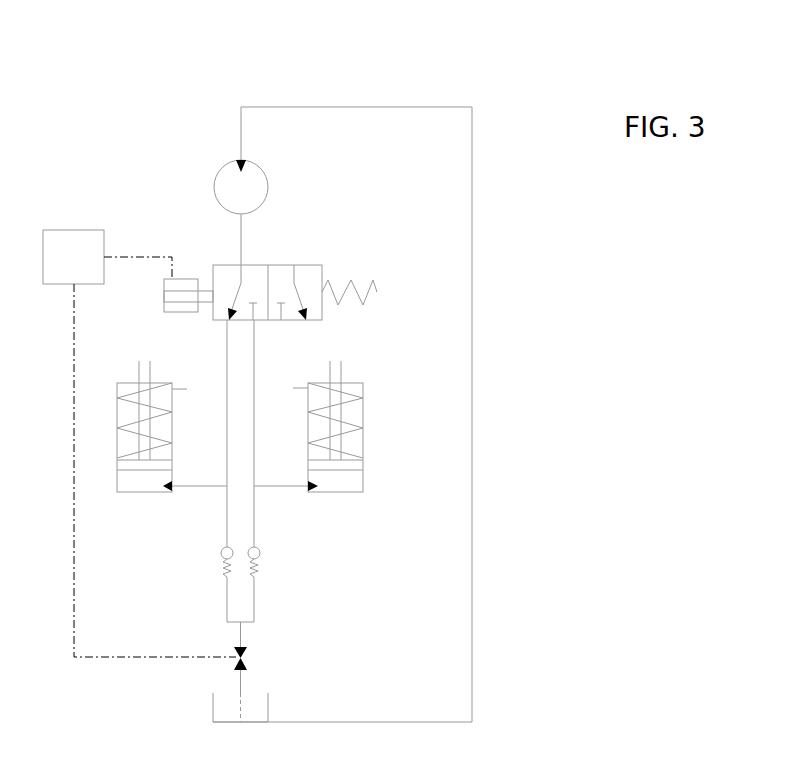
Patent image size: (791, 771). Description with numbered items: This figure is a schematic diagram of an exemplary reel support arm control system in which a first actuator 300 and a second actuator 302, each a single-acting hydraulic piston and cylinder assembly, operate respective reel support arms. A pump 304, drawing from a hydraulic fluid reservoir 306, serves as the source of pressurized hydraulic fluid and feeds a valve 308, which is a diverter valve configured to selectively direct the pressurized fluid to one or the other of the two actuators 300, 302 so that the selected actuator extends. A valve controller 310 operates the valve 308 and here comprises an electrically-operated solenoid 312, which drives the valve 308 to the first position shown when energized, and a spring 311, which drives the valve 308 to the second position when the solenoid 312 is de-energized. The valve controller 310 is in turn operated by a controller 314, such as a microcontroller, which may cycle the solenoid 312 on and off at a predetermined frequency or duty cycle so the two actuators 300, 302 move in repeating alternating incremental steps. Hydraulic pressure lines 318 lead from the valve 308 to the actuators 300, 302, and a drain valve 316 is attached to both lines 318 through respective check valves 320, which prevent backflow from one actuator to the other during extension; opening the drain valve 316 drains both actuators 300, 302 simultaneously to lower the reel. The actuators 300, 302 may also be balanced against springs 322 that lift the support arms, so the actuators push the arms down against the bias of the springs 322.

The first actuator 300 is at (150, 493).
The second actuator 302 is at (335, 493).
The pump 304 is at (254, 188).
The hydraulic fluid reservoir 306 is at (213, 707).
The valve 308 is at (281, 277).
The valve controller 310 is at (138, 170).
The spring 311 is at (373, 282).
The solenoid 312 is at (165, 287).
The controller 314 is at (73, 243).
The drain valve 316 is at (247, 660).
The hydraulic pressure lines 318 is at (227, 517).
The check valves 320 is at (222, 558).
The springs 322 is at (131, 395).